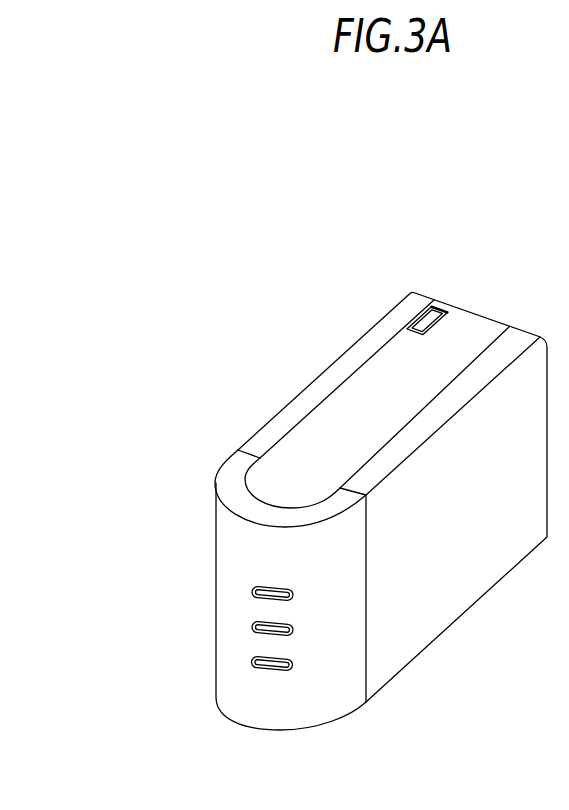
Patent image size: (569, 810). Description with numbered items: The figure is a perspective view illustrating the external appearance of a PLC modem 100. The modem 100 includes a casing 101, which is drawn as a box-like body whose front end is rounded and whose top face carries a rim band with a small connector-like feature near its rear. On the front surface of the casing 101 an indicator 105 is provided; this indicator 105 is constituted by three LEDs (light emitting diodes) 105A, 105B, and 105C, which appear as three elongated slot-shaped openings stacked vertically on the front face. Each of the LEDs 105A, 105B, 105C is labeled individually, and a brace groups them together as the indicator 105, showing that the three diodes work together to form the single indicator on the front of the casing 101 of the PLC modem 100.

The PLC modem 100 is at (363, 308).
The casing 101 is at (290, 405).
The indicator 105 is at (176, 619).
The LED 105A is at (254, 591).
The LED 105B is at (254, 627).
The LED 105C is at (253, 660).